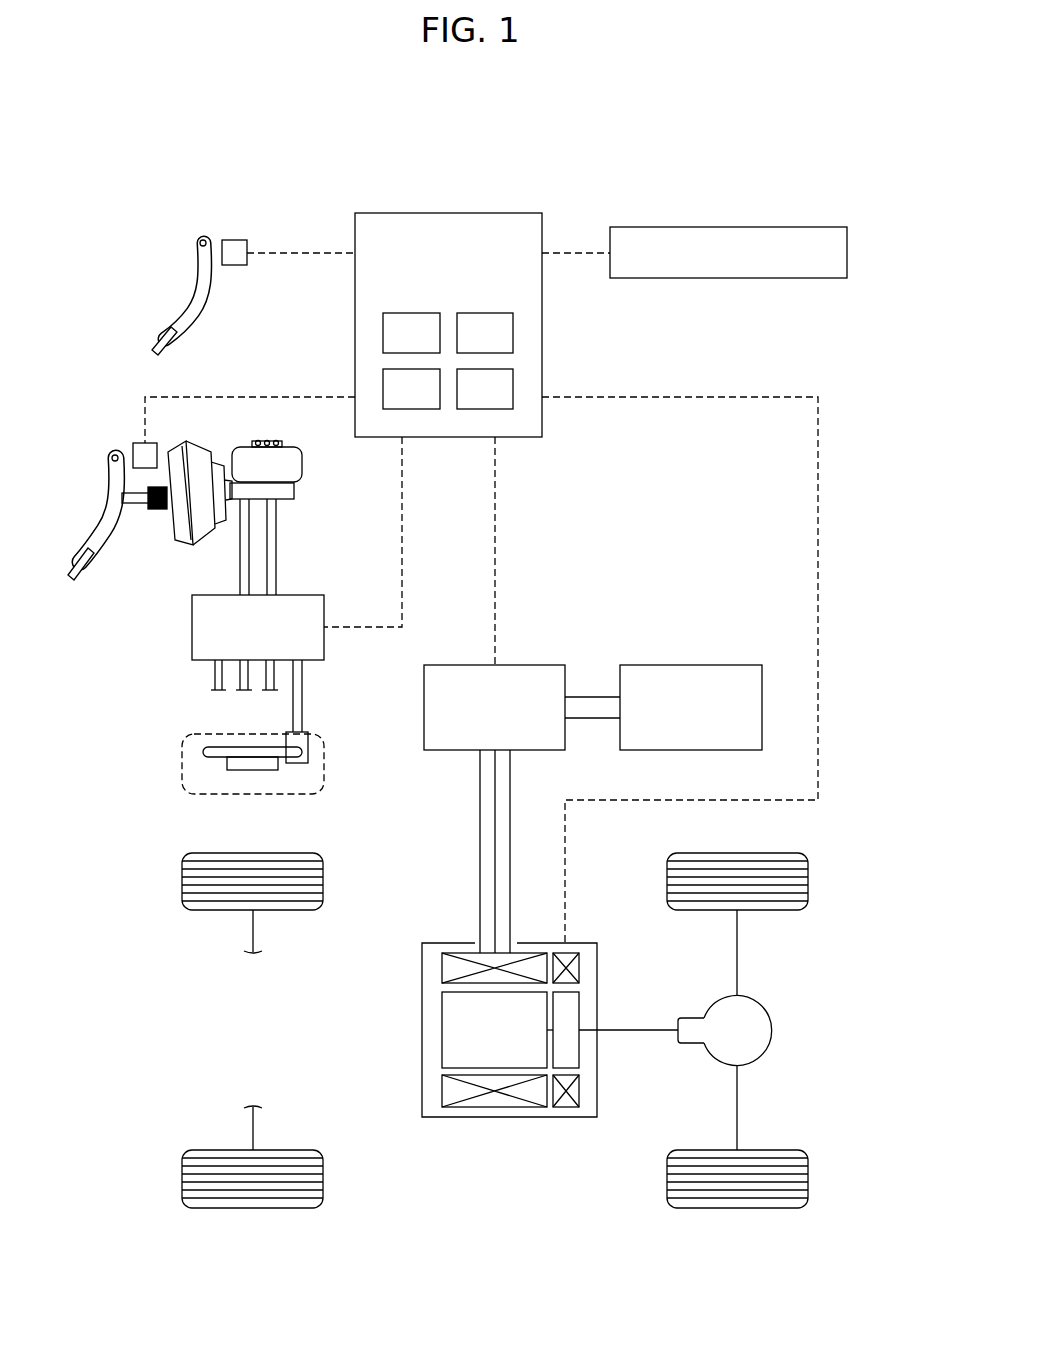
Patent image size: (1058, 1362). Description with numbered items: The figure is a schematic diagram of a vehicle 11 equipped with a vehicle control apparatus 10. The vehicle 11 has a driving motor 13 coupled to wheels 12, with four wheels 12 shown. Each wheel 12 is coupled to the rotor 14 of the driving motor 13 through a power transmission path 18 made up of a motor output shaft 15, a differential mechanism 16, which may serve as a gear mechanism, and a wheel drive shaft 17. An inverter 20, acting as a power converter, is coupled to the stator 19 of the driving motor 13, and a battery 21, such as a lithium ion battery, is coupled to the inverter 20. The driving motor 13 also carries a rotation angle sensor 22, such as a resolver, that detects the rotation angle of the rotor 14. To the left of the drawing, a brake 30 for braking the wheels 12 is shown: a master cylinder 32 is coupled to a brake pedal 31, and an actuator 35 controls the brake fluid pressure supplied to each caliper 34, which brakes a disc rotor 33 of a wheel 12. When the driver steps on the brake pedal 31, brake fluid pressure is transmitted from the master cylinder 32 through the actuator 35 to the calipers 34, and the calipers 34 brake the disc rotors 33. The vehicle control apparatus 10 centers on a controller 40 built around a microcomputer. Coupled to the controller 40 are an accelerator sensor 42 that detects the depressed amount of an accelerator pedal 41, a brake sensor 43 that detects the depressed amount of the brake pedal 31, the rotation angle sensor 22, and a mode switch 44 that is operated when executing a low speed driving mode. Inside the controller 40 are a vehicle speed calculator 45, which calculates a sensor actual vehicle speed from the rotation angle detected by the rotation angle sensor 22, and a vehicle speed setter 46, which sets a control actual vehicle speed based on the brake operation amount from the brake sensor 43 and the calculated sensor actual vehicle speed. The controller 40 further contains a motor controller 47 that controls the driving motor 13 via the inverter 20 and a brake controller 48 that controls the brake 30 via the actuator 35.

The vehicle control apparatus 10 is at (679, 145).
The vehicle 11 is at (785, 123).
The wheels 12 is at (324, 775).
The driving motor 13 is at (480, 1078).
The rotor 14 is at (442, 1012).
The motor output shaft 15 is at (637, 1028).
The differential mechanism 16 is at (773, 1034).
The wheel drive shaft 17 is at (742, 951).
The power transmission path 18 is at (755, 980).
The stator 19 is at (442, 965).
The inverter 20 is at (537, 664).
The battery 21 is at (733, 664).
The rotation angle sensor 22 is at (568, 1112).
The brake 30 is at (106, 397).
The brake pedal 31 is at (78, 552).
The master cylinder 32 is at (290, 500).
The disc rotors 33 is at (203, 752).
The calipers 34 is at (310, 745).
The actuator 35 is at (192, 633).
The controller 40 is at (517, 212).
The accelerator pedal 41 is at (153, 335).
The accelerator sensor 42 is at (232, 238).
The brake sensor 43 is at (131, 450).
The mode switch 44 is at (848, 246).
The vehicle speed calculator 45 is at (428, 347).
The vehicle speed setter 46 is at (502, 347).
The motor controller 47 is at (428, 403).
The brake controller 48 is at (502, 403).